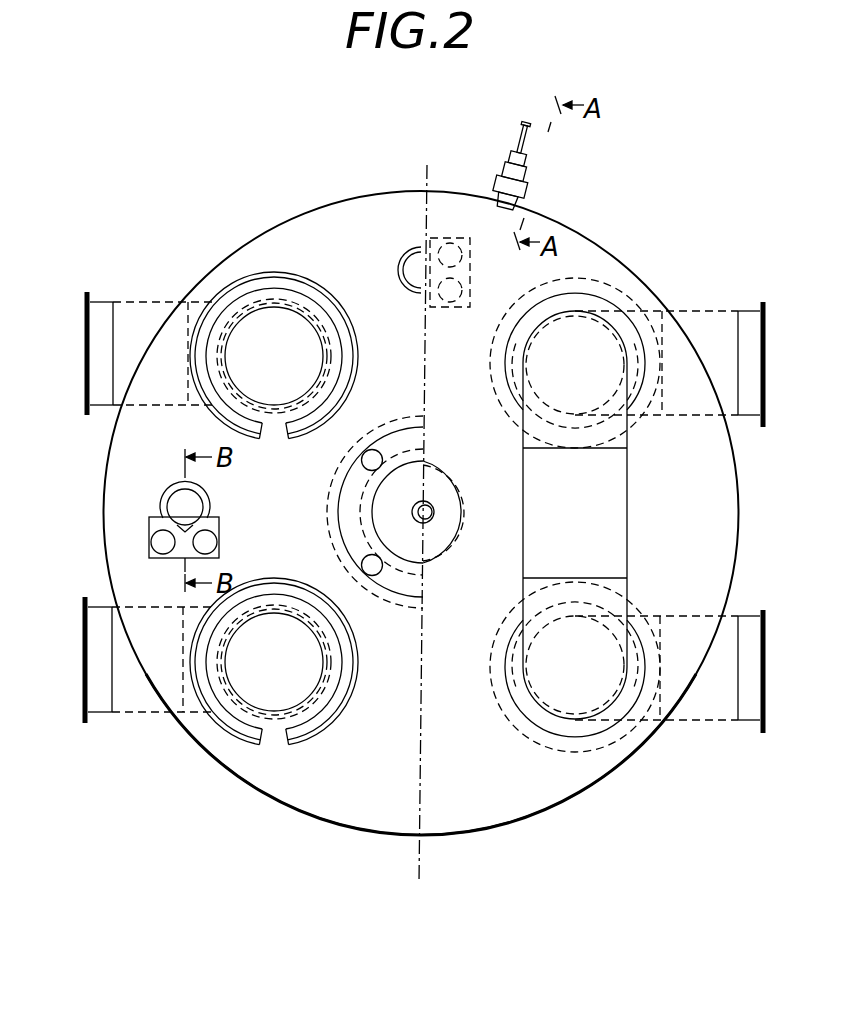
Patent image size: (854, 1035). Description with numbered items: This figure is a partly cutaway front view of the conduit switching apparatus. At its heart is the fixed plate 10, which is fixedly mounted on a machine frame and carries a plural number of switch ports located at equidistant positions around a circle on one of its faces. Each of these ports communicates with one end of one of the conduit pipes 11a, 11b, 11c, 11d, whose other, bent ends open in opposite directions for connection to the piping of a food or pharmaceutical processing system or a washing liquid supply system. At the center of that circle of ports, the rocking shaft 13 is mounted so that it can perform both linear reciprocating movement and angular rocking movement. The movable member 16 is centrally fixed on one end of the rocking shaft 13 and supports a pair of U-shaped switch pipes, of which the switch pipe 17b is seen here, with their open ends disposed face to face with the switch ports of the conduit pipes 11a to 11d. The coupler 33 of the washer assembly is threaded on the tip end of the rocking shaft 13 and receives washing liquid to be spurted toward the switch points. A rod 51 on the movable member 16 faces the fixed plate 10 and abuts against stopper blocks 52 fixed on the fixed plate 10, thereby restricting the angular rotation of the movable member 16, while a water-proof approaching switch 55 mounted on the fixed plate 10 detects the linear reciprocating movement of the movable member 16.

The fixed plate 10 is at (290, 235).
The conduit pipe 11a is at (135, 310).
The conduit pipe 11b is at (137, 697).
The conduit pipe 11c is at (718, 320).
The conduit pipe 11d is at (720, 708).
The rocking shaft 13 is at (398, 607).
The movable member 16 is at (538, 790).
The switch pipe 17b is at (610, 510).
The coupler 33 is at (434, 538).
The rod 51 is at (447, 345).
The stopper block 52 is at (62, 517).
The approaching switch 55 is at (529, 185).